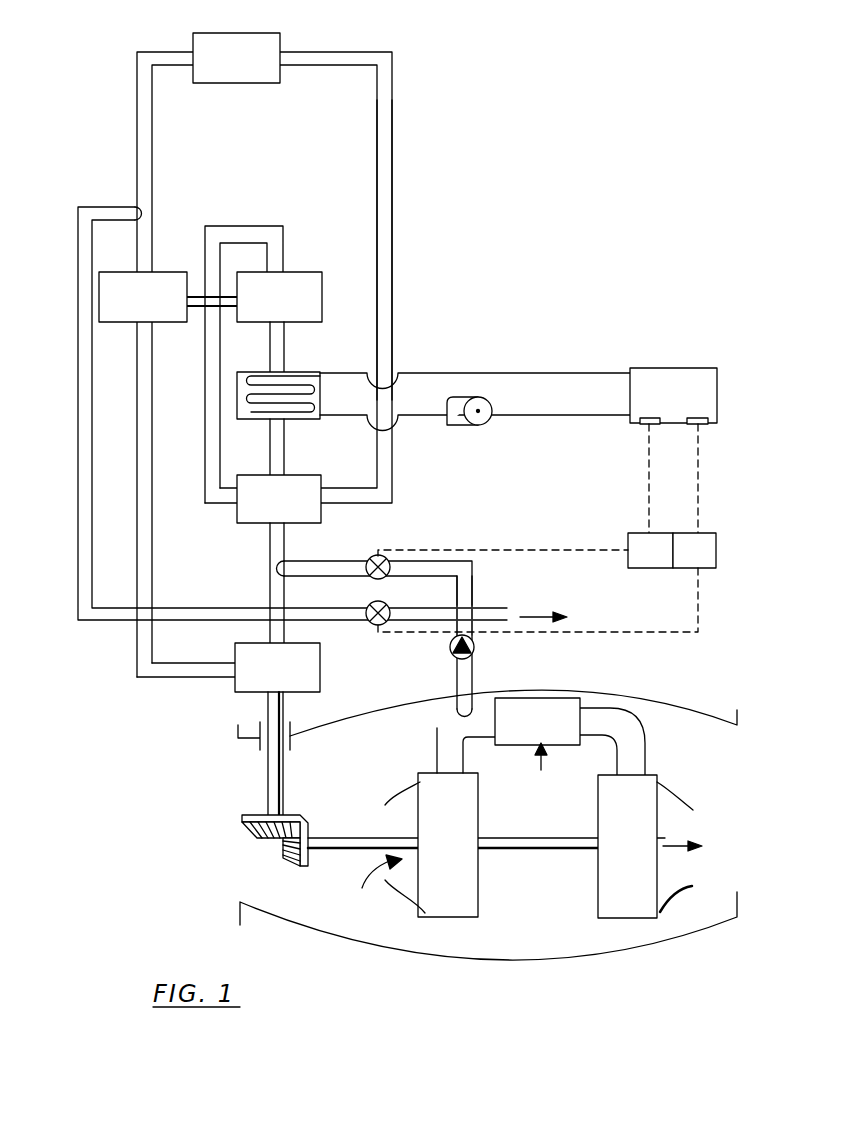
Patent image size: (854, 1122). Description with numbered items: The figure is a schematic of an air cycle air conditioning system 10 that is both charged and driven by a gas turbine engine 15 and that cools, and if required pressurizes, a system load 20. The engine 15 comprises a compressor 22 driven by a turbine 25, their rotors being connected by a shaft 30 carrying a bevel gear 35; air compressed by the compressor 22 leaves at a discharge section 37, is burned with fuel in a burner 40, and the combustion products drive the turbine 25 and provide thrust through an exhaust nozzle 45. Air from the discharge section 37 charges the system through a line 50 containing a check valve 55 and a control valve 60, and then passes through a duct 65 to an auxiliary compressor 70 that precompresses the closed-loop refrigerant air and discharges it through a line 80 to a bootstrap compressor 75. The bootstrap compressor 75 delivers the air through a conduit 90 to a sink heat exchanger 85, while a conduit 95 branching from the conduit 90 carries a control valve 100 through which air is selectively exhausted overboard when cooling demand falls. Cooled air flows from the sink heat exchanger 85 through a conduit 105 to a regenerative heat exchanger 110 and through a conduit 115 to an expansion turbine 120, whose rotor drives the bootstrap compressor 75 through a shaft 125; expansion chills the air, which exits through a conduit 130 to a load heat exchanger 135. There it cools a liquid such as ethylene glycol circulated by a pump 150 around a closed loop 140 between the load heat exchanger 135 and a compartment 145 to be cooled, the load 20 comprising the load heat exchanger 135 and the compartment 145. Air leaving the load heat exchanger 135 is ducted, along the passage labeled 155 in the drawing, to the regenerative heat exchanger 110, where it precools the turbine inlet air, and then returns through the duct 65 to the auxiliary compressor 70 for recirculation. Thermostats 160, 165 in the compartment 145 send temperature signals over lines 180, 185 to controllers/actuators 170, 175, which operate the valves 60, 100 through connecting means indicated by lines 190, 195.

The air cycle air conditioning system 10 is at (406, 124).
The gas turbine engine 15 is at (553, 1020).
The system load 20 is at (673, 352).
The compressor 22 is at (475, 918).
The turbine 25 is at (652, 783).
The shaft 30 is at (542, 850).
The bevel gear 35 is at (292, 858).
The discharge section 37 is at (440, 731).
The burner 40 is at (548, 700).
The exhaust nozzle 45 is at (688, 888).
The line 50 is at (457, 668).
The check valve 55 is at (477, 649).
The control valve 60 is at (372, 565).
The duct 65 is at (270, 598).
The auxiliary compressor 70 is at (242, 691).
The bootstrap compressor 75 is at (143, 297).
The line 80 is at (138, 428).
The sink heat exchanger 85 is at (284, 40).
The conduit 90 is at (140, 100).
The conduit 95 is at (97, 207).
The control valve 100 is at (377, 626).
The conduit 105 is at (385, 228).
The regenerative heat exchanger 110 is at (308, 480).
The conduit 115 is at (207, 472).
The expansion turbine 120 is at (303, 280).
The shaft 125 is at (198, 296).
The conduit 130 is at (272, 355).
The load heat exchanger 135 is at (253, 418).
The closed loop 140 is at (408, 375).
The compartment 145 is at (629, 375).
The pump 150 is at (480, 430).
The conduit 155 is at (280, 453).
The sensor 160 is at (648, 418).
The sensor 165 is at (697, 413).
The controller/actuator 170 is at (650, 550).
The controller/actuator 175 is at (694, 550).
The line 180 is at (649, 472).
The line 185 is at (708, 476).
The line 190 is at (516, 549).
The line 195 is at (636, 634).